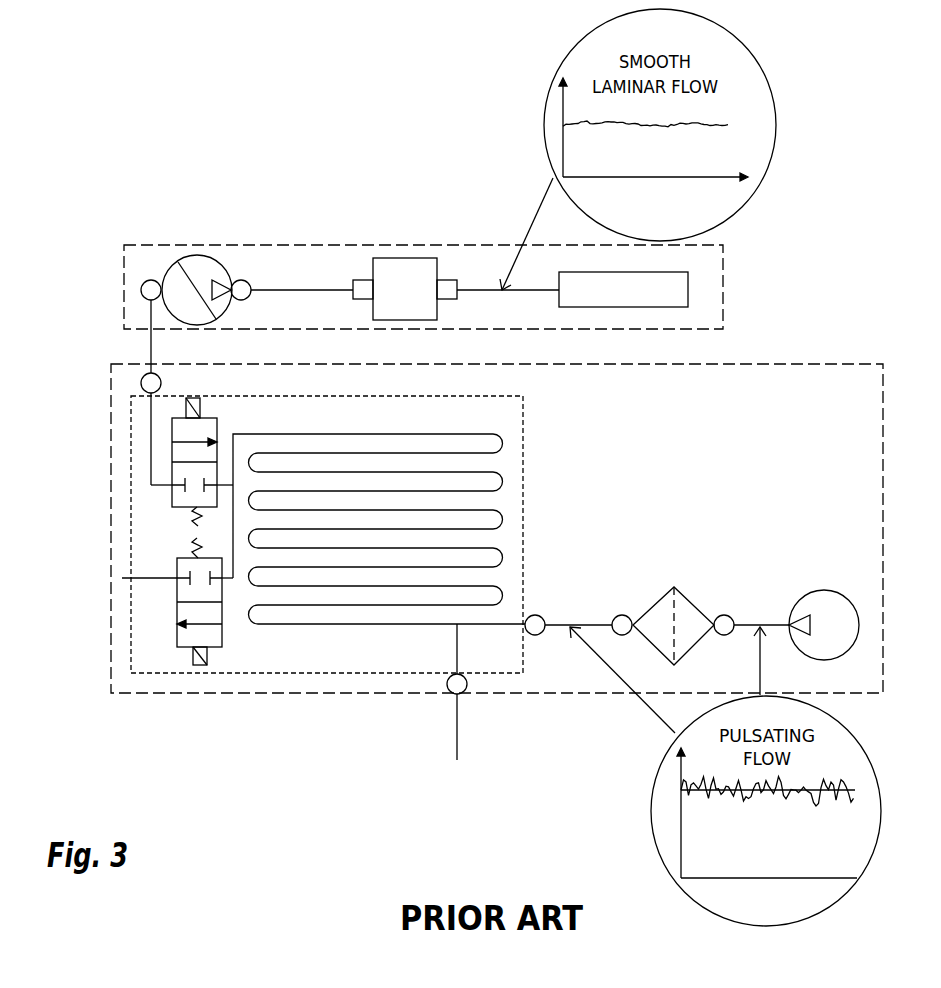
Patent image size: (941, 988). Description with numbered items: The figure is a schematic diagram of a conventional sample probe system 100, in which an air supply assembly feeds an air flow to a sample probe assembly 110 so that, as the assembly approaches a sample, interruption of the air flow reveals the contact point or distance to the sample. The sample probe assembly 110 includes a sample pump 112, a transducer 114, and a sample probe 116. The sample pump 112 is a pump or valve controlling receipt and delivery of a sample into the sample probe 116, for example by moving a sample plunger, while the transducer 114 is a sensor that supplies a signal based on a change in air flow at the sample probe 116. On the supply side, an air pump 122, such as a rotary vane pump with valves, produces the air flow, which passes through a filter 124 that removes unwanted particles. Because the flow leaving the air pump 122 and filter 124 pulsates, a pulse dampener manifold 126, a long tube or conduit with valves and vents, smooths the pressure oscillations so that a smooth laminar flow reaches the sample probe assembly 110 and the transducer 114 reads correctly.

The sample probe system 100 is at (112, 181).
The sample probe assembly 110 is at (336, 245).
The sample pump 112 is at (224, 272).
The transducer 114 is at (405, 289).
The sample probe 116 is at (623, 289).
The air pump 122 is at (826, 591).
The filter 124 is at (674, 587).
The pulse dampener manifold 126 is at (523, 455).